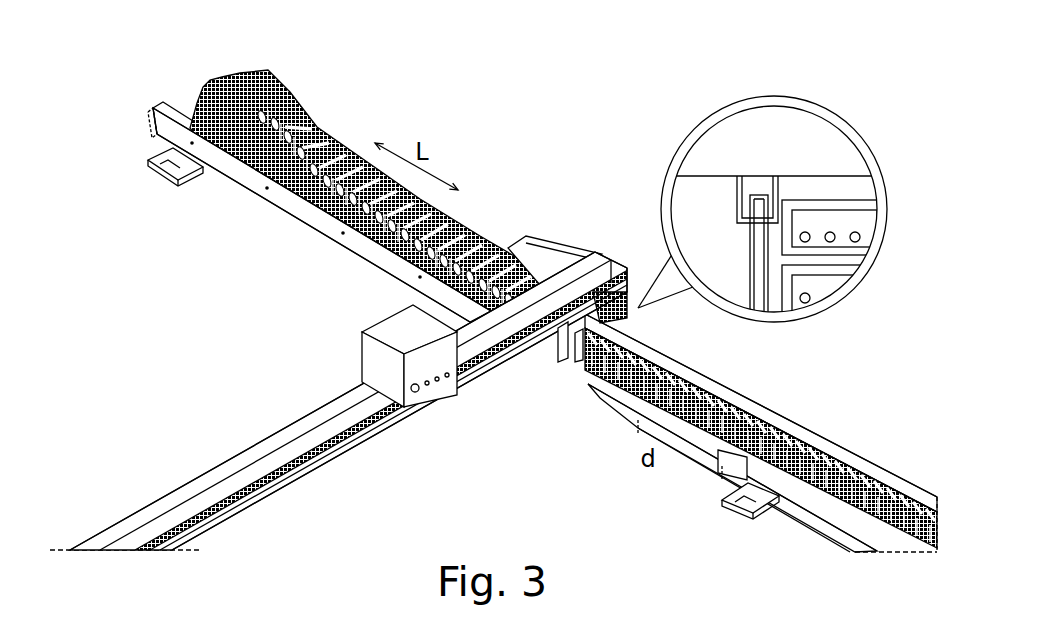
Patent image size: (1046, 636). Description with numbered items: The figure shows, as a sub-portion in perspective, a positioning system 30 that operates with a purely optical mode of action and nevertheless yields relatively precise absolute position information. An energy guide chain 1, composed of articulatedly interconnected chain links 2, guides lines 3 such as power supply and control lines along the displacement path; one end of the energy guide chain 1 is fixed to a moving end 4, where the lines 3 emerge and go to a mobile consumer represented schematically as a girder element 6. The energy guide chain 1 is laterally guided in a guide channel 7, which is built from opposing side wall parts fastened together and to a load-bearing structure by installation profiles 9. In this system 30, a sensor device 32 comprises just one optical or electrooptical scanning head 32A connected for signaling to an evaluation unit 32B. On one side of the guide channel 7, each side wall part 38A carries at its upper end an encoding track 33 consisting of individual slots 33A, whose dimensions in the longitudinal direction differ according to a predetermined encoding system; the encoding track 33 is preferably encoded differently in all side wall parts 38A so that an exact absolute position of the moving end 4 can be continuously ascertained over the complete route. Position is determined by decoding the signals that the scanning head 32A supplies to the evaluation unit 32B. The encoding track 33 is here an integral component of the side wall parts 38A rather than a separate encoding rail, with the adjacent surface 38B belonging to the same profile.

The energy guide chain 1 is at (290, 73).
The guide channel 7 is at (188, 102).
The installation profiles 9 is at (148, 168).
The moving end 4 is at (527, 262).
The girder element 6 is at (283, 440).
The sensor device 32 is at (577, 384).
The evaluation unit 32B is at (374, 361).
The scanning head 32A is at (738, 198).
The positioning system 30 is at (165, 358).
The encoding track 33 is at (707, 440).
The slots 33A is at (757, 212).
The side wall part 38A is at (760, 292).
The rail top surface 38B is at (873, 477).
The chain links 2 is at (853, 204).
The lines 3 is at (860, 238).